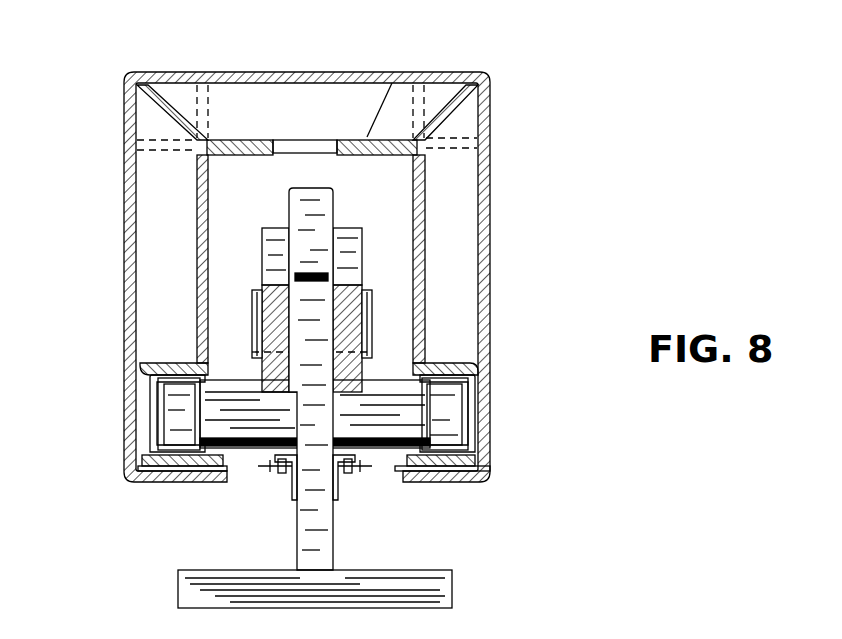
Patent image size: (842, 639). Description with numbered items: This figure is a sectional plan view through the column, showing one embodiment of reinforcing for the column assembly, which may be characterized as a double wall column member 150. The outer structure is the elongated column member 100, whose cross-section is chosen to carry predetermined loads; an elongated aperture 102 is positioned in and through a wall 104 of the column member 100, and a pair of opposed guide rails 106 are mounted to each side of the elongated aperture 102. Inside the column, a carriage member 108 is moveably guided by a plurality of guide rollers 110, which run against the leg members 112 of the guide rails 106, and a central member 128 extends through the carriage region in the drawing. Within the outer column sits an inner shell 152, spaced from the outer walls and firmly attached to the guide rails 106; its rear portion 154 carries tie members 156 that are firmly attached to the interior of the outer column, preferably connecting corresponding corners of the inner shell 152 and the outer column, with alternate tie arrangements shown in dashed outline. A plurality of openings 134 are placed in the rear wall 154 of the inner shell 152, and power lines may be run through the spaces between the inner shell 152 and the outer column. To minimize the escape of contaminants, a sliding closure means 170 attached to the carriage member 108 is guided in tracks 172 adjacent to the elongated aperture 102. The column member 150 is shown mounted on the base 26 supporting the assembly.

The elongated column member 100 is at (300, 72).
The elongated aperture 102 is at (228, 484).
The wall 104 is at (140, 478).
The guide rails 106 is at (165, 440).
The carriage member 108 is at (250, 378).
The guide rollers 110 is at (165, 392).
The leg members 112 is at (185, 363).
The shaft 128 is at (288, 190).
The openings 134 is at (277, 143).
The double wall column member 150 is at (545, 138).
The inner shell 152 is at (417, 205).
The rear portion 154 is at (380, 100).
The tie members 156 is at (205, 110).
The sliding closure means 170 is at (370, 470).
The tracks 172 is at (205, 483).
The base plate (26) / surface (40) 26 is at (455, 586).